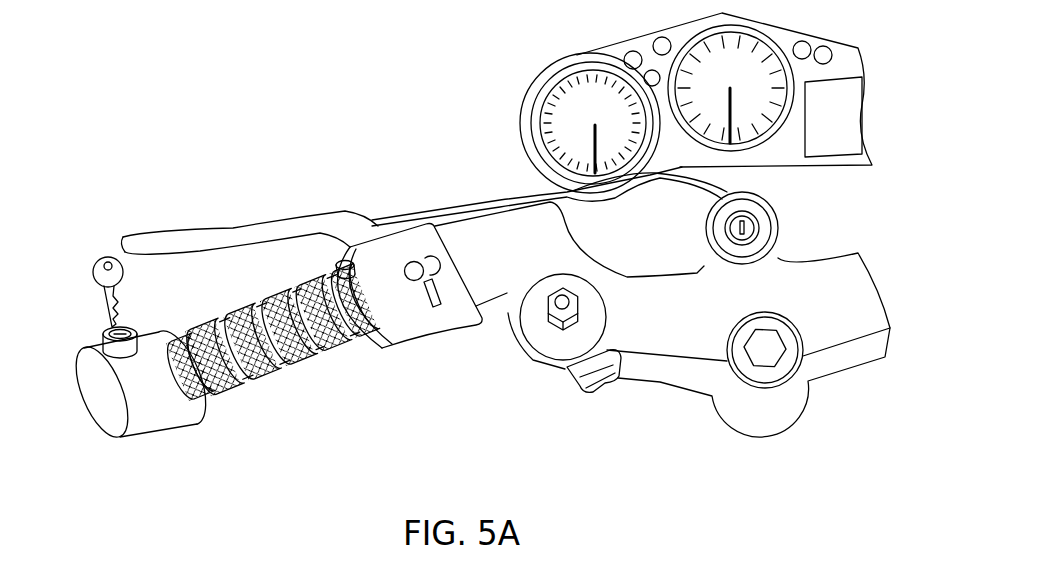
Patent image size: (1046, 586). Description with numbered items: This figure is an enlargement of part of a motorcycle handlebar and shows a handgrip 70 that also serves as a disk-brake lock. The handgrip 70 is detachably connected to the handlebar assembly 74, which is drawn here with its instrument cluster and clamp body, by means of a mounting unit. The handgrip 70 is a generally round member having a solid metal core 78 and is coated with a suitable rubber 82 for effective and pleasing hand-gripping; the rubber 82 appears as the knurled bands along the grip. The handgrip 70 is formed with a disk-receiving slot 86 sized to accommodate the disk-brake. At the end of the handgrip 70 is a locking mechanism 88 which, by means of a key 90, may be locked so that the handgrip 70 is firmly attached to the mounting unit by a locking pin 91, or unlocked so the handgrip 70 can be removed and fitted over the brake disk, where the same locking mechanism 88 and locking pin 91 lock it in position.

The handgrip 70 is at (294, 400).
The handlebar assembly 74 is at (421, 188).
The solid metal core 78 is at (160, 424).
The rubber 82 is at (250, 310).
The disk-receiving slot 86 is at (321, 352).
The locking mechanism 88 is at (90, 313).
The key 90 is at (100, 258).
The locking pin 91 is at (345, 262).